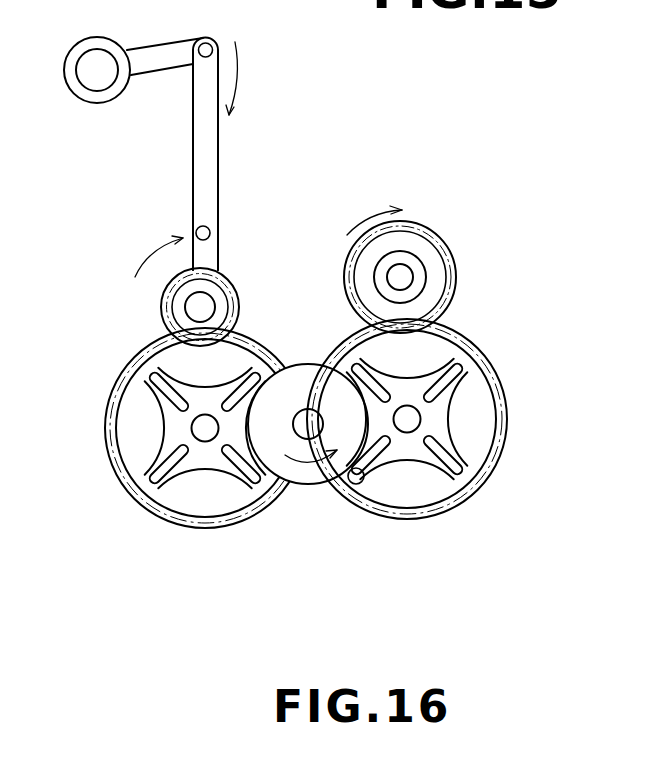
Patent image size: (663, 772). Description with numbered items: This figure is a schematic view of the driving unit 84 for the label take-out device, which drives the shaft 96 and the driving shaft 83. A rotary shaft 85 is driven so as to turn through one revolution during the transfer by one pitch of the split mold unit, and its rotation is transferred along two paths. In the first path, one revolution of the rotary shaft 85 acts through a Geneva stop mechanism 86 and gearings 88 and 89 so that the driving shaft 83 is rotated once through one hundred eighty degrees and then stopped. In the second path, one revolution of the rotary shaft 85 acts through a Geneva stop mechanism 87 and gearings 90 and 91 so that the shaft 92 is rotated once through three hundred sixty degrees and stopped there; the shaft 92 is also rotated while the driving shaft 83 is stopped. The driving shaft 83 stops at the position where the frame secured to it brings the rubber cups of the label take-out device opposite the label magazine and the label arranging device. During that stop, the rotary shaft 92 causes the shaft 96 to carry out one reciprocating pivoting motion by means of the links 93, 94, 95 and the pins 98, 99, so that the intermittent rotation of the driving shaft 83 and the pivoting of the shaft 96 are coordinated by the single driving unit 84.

The driving shaft 83 is at (405, 268).
The driving unit 84 is at (177, 552).
The rotary shaft 85 is at (308, 435).
The Geneva stop mechanism 86 is at (367, 522).
The Geneva stop mechanism 87 is at (233, 530).
The gearing 88 is at (485, 350).
The gearing 89 is at (453, 257).
The gearing 90 is at (105, 402).
The gearing 91 is at (160, 312).
The shaft 92 is at (212, 297).
The link 93 is at (217, 247).
The link 94 is at (213, 155).
The link 95 is at (177, 36).
The shaft 96 is at (92, 85).
The pin 98 is at (194, 64).
The pin 99 is at (195, 230).